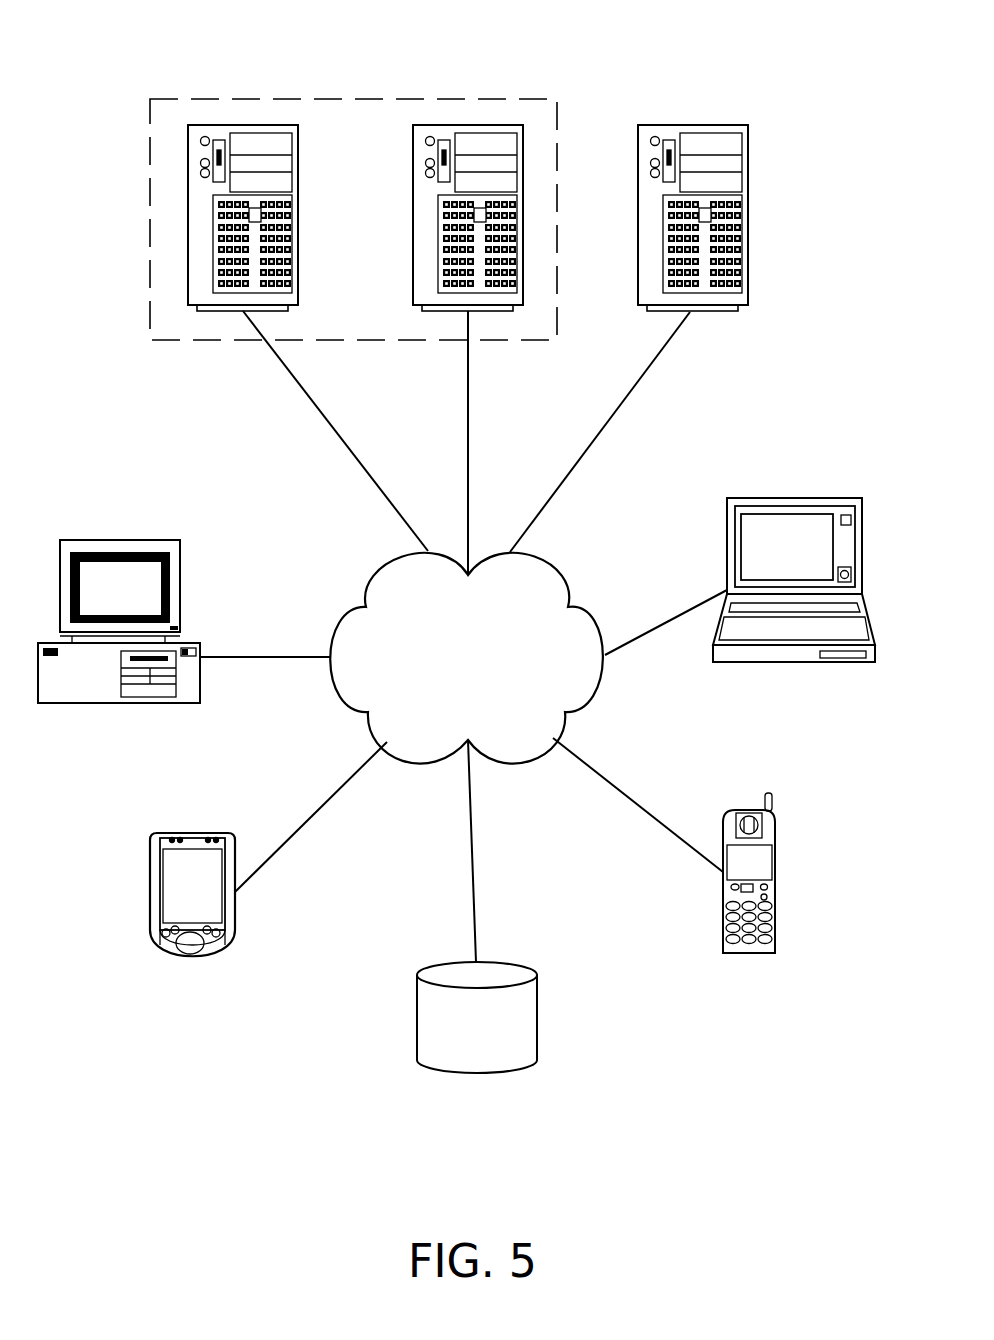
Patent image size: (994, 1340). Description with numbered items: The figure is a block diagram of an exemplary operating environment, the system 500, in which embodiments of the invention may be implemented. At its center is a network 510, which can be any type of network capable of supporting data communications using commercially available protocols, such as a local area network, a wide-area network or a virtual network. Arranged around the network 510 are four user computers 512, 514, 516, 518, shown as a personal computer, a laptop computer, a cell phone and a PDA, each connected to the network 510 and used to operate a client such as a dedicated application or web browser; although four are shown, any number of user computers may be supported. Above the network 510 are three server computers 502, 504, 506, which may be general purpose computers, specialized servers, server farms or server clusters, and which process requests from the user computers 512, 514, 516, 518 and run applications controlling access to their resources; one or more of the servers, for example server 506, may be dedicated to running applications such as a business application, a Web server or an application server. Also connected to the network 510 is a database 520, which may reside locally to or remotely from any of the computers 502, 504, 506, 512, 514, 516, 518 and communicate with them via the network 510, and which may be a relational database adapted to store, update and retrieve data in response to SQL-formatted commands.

The system 500 is at (847, 132).
The server computer 502 is at (224, 125).
The server computer 504 is at (465, 125).
The server computer 506 is at (748, 217).
The network 510 is at (487, 707).
The user computer 512 is at (117, 540).
The user computer 514 is at (790, 498).
The user computer 516 is at (745, 955).
The user computer 518 is at (190, 960).
The database 520 is at (497, 1066).